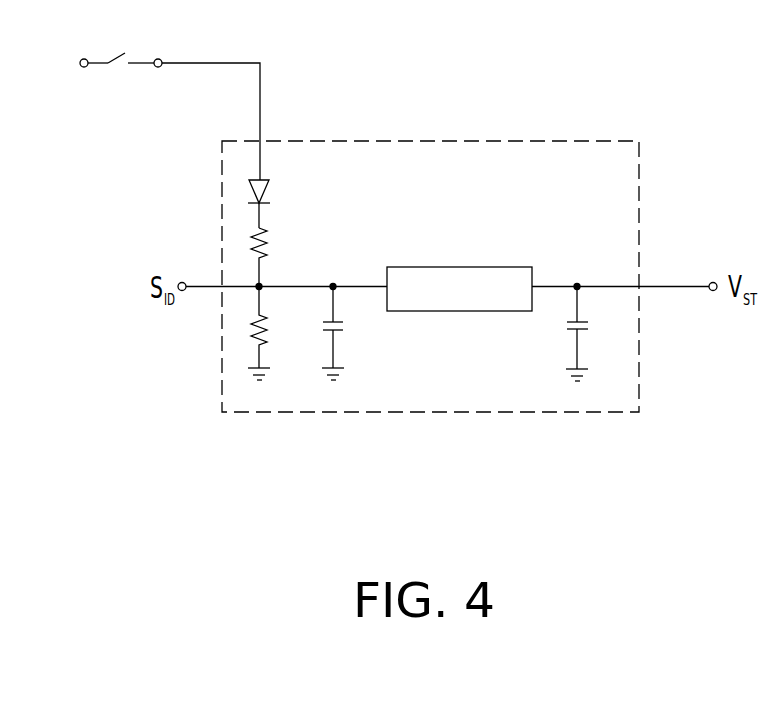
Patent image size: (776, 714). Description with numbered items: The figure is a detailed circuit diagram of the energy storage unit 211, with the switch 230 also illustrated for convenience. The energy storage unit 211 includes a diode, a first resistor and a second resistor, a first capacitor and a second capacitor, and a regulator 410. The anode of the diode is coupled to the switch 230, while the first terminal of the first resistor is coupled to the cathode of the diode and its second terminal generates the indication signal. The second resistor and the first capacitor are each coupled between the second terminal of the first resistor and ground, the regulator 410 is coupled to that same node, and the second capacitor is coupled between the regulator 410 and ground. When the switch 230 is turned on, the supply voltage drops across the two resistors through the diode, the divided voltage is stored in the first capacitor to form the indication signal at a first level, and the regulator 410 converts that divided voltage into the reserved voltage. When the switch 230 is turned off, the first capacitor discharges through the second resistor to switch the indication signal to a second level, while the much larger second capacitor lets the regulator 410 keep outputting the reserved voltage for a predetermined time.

The switch 230 is at (150, 67).
The energy storage unit 211 is at (464, 276).
The regulator 410 is at (438, 312).